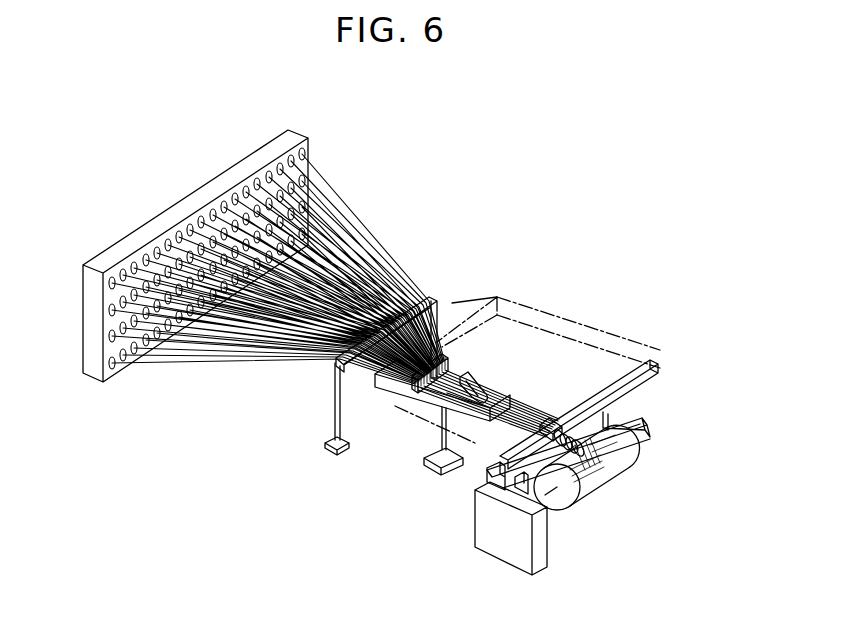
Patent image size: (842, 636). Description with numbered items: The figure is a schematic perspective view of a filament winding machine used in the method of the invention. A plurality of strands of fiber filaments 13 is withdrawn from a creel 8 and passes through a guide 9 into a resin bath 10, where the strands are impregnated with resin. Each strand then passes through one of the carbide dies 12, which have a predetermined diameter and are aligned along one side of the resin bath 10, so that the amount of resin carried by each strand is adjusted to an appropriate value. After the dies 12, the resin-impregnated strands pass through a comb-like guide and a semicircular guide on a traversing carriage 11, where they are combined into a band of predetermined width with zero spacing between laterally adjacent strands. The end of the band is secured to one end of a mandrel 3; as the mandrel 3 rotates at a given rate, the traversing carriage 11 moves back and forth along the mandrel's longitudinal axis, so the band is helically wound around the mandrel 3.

The mandrel 3 is at (600, 486).
The creel 8 is at (300, 137).
The guide 9 is at (436, 300).
The resin bath 10 is at (425, 399).
The traversing carriage 11 is at (556, 424).
The carbide dies 12 is at (481, 383).
The strands of fiber filaments 13 is at (370, 256).